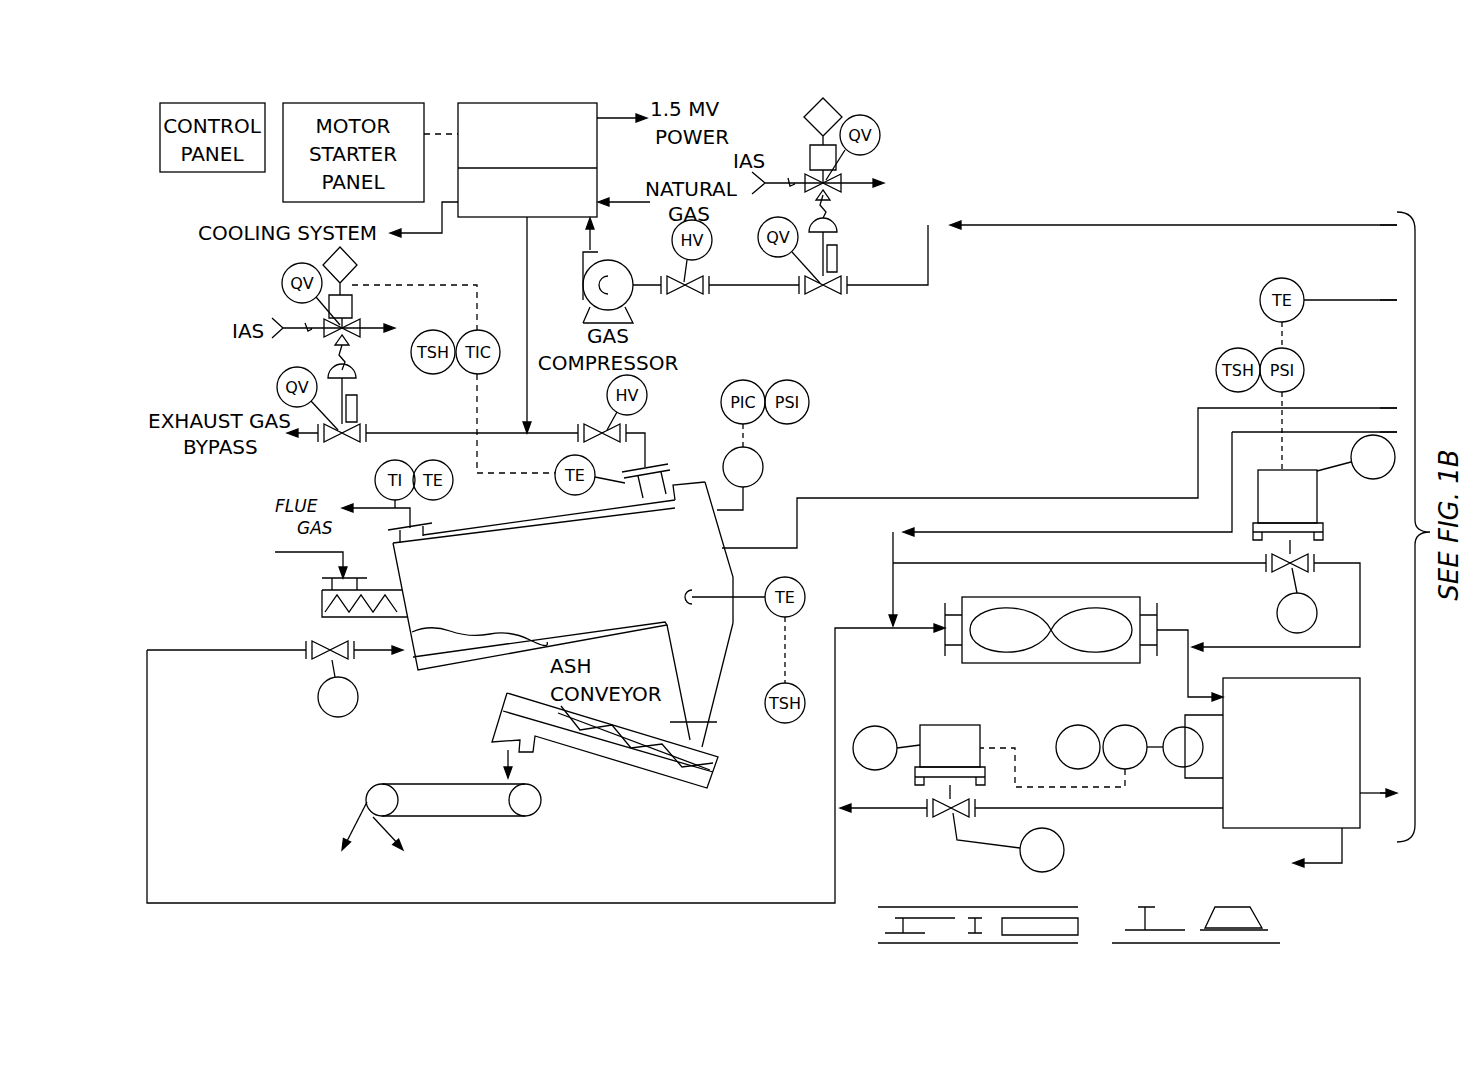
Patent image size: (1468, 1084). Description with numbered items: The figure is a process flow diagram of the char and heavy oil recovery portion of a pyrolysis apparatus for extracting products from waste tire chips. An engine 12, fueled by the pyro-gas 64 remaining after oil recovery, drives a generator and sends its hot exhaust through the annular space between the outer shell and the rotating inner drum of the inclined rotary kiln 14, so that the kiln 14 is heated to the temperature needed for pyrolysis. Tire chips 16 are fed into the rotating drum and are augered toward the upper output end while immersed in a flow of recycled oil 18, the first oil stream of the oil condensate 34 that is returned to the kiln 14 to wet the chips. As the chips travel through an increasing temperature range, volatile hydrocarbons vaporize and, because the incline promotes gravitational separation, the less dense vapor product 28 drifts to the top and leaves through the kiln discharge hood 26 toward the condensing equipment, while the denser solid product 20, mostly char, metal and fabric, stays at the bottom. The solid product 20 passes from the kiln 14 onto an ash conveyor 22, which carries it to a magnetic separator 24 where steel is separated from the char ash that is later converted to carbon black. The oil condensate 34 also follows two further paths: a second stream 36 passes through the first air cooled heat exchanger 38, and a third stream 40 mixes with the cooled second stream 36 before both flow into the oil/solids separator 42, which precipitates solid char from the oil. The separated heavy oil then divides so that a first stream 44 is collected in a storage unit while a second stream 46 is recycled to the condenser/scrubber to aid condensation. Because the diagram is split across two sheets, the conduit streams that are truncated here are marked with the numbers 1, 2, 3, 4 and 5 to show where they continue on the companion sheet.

The engine 12 is at (598, 178).
The kiln 14 is at (568, 550).
The tire chips 16 is at (312, 557).
The recycled oil 18 is at (188, 650).
The solid product 20 is at (707, 656).
The ash conveyor 22 is at (598, 738).
The magnetic separator 24 is at (518, 812).
The kiln discharge hood 26 is at (738, 541).
The vapor product 28 is at (935, 498).
The oil condensate 34 is at (1015, 530).
The second stream 36 is at (905, 627).
The first air cooled heat exchanger 38 is at (1052, 605).
The third stream 40 is at (1018, 563).
The oil/solids separator 42 is at (1300, 717).
The first stream of heavy oil 44 is at (1083, 808).
The second stream of heavy oil 46 is at (1368, 790).
The pyro-gas 64 is at (1148, 224).
The conduit stream 1 is at (1395, 225).
The conduit stream 2 is at (1395, 301).
The conduit stream 3 is at (1395, 409).
The conduit stream 4 is at (1395, 433).
The conduit stream 5 is at (1395, 794).